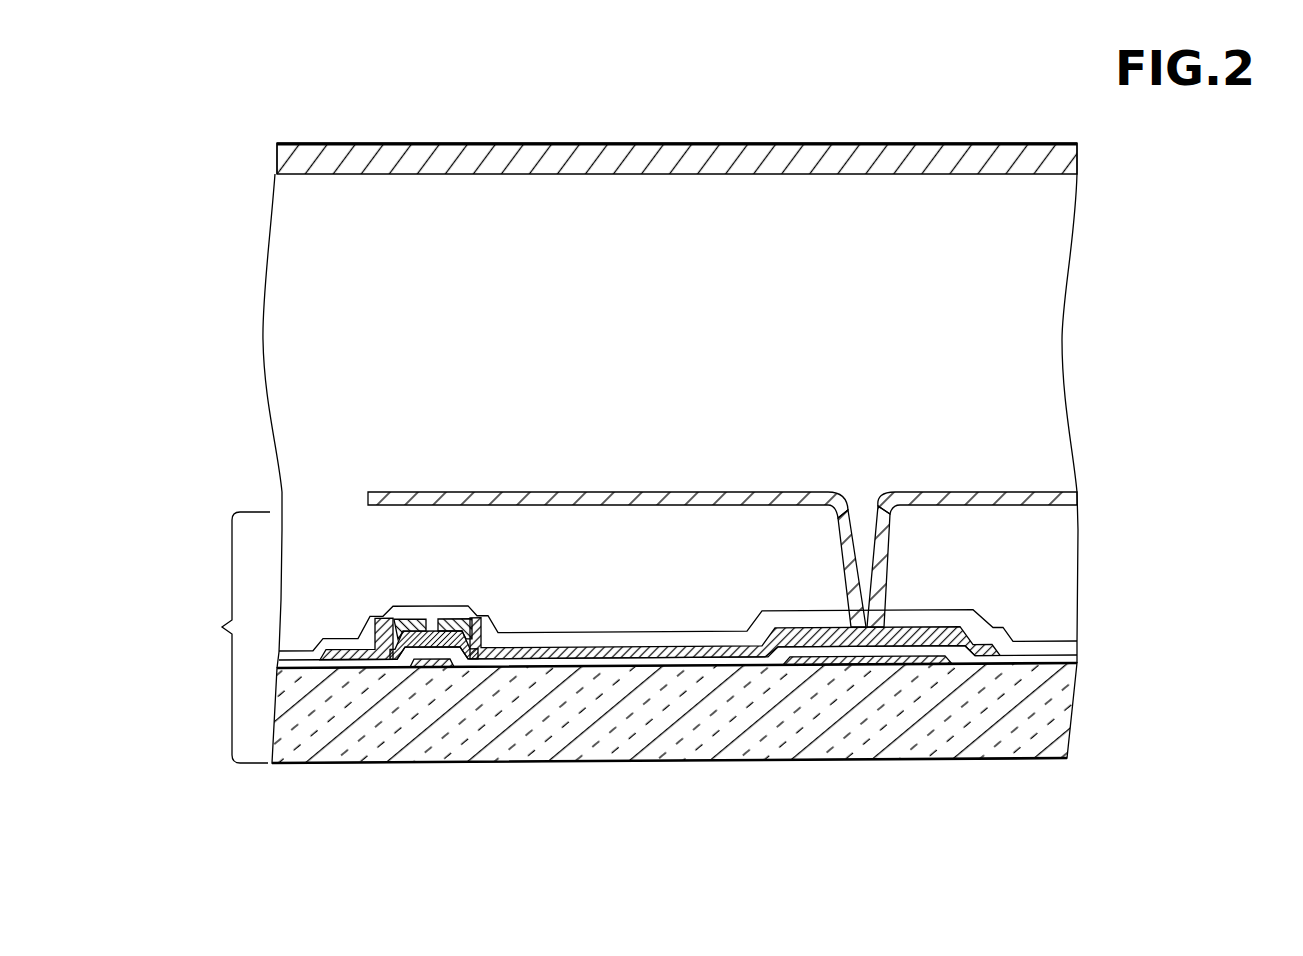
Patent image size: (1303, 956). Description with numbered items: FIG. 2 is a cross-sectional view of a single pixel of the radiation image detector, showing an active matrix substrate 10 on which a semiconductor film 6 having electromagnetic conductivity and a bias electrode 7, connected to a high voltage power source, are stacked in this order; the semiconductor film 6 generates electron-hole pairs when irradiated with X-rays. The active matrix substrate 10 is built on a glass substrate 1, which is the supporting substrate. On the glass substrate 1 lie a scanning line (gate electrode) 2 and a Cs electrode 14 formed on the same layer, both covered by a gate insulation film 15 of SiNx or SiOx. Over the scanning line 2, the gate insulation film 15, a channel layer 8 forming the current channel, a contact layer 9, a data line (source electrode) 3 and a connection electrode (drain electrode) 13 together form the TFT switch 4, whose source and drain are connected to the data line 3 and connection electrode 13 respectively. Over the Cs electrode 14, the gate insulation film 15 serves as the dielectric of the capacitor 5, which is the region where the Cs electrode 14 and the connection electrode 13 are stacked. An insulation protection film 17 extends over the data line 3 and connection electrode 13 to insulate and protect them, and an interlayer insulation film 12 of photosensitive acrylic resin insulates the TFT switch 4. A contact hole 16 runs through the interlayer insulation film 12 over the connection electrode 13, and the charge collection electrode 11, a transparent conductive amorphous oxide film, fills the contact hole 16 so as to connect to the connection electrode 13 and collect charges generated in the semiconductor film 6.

The glass substrate 1 is at (698, 732).
The scanning line (gate electrode) 2 is at (302, 750).
The data line (source electrode) 3 is at (332, 648).
The TFT switch 4 is at (408, 704).
The capacitor (Cs) 5 is at (923, 662).
The semiconductor film 6 is at (657, 210).
The bias electrode 7 is at (859, 160).
The channel layer 8 is at (448, 643).
The contact layer 9 is at (440, 630).
The active matrix substrate 10 is at (218, 637).
The charge collection electrode 11 is at (595, 492).
The interlayer insulation film 12 is at (752, 530).
The connection electrode (drain electrode) 13 is at (758, 652).
The Cs electrode 14 is at (868, 655).
The gate insulation film 15 is at (600, 660).
The contact hole 16 is at (868, 510).
The insulation protection film 17 is at (707, 638).